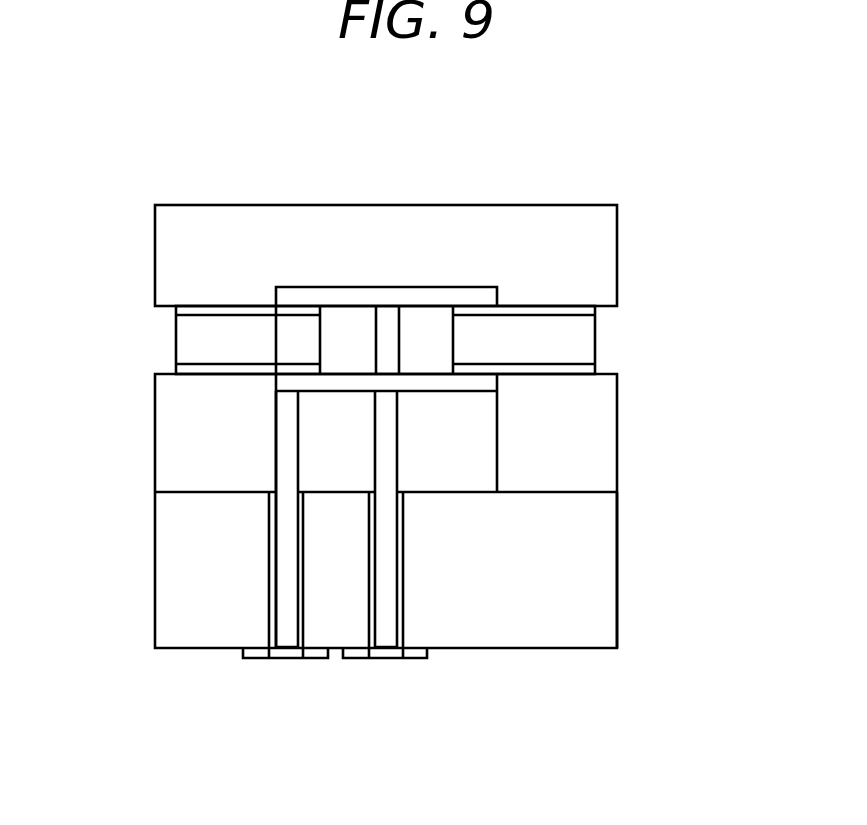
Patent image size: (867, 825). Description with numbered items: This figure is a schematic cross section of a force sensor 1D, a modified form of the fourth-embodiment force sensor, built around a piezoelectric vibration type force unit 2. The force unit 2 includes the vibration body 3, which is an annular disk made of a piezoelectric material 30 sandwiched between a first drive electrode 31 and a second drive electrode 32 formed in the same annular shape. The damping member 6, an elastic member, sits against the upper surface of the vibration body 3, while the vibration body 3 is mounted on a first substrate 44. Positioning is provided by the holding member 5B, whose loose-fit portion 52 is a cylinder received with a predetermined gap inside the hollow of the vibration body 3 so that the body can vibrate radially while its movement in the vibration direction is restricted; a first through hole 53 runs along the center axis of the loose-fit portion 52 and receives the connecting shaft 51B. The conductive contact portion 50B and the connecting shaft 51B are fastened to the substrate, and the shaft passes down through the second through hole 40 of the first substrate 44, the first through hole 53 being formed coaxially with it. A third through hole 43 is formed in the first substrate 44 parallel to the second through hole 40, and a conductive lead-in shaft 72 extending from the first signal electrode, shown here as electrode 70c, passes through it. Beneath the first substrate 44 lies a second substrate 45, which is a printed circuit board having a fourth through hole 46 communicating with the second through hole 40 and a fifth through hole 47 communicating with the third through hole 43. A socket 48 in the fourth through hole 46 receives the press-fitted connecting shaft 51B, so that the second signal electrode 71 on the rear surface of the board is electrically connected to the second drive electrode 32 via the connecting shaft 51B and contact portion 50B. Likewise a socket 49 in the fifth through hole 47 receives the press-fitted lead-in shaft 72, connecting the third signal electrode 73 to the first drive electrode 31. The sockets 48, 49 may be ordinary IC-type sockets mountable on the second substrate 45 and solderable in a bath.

The force sensor 1D is at (650, 212).
The force unit 2 is at (138, 267).
The vibration body 3 is at (53, 288).
The holding member 5B is at (485, 142).
The damping member 6 is at (613, 258).
The piezoelectric material 30 is at (182, 337).
The first drive electrode 31 is at (193, 366).
The second drive electrode 32 is at (192, 310).
The second through hole 40 is at (398, 443).
The third through hole 43 is at (276, 464).
The first substrate 44 is at (612, 472).
The second substrate 45 is at (612, 577).
The fourth through hole 46 is at (403, 615).
The fifth through hole 47 is at (268, 615).
The socket 48 is at (369, 615).
The socket 49 is at (303, 615).
The contact portion 50B is at (428, 293).
The connecting shaft 51B is at (388, 318).
The loose-fit portion 52 is at (343, 322).
The first through hole 53 is at (399, 345).
The wiring layer 70c is at (287, 384).
The second signal electrode 71 is at (427, 657).
The lead-in shaft 72 is at (287, 423).
The third signal electrode 73 is at (245, 657).